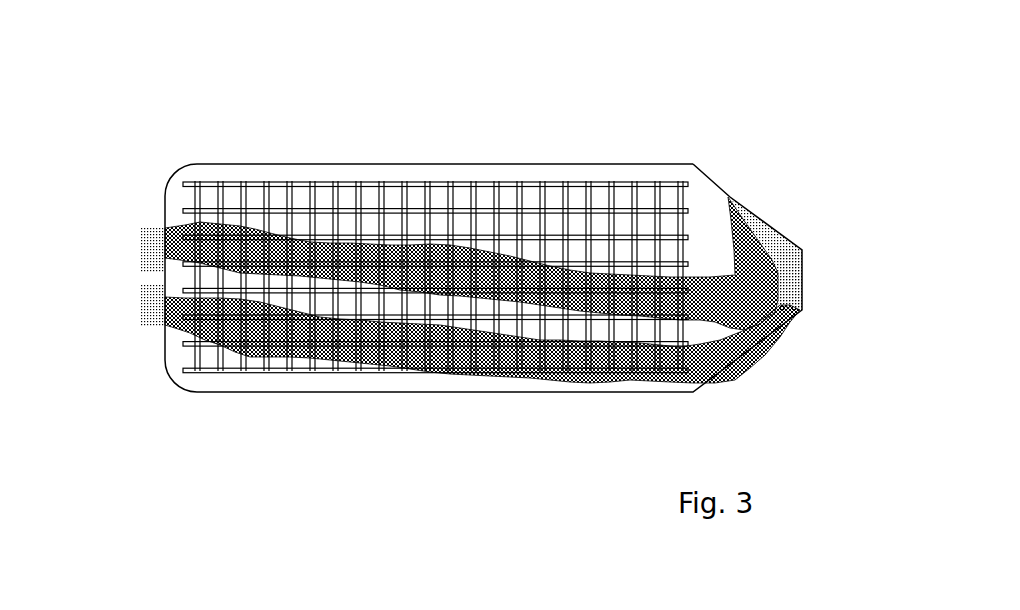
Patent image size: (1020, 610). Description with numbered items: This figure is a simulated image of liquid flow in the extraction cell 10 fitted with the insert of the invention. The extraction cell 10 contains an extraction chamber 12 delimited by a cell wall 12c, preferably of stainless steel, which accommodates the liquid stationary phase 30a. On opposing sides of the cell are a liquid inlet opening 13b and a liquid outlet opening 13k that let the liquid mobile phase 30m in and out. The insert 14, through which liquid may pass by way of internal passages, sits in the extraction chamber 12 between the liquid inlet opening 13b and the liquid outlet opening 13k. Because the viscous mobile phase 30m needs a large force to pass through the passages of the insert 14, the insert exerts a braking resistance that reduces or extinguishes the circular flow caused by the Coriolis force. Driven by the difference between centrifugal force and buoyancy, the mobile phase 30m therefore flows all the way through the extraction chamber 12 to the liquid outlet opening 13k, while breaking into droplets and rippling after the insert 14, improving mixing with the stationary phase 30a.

The extraction cell 10 is at (240, 68).
The extraction chamber 12 is at (496, 435).
The cell wall 12c is at (395, 165).
The insert 14 is at (500, 205).
The liquid mobile phase 30m is at (633, 290).
The liquid stationary phase 30a is at (712, 217).
The liquid inlet opening 13b is at (148, 280).
The liquid outlet opening 13k is at (802, 252).